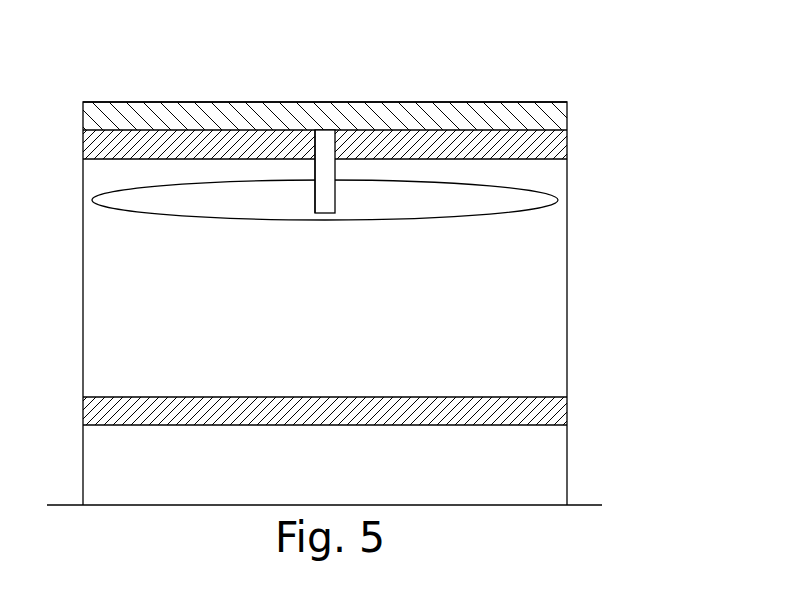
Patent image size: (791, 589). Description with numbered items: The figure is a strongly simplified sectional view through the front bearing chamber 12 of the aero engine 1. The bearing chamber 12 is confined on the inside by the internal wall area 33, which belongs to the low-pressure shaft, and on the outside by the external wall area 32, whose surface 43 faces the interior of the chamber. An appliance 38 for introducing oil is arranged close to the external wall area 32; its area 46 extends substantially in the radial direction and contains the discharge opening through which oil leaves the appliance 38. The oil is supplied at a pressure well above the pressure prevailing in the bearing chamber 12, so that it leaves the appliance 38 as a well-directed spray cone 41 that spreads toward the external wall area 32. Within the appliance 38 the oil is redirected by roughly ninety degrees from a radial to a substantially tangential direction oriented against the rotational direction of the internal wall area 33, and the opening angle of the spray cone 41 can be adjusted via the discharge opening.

The aero engine 1 is at (76, 77).
The front bearing chamber 12 is at (178, 99).
The external wall area 32 is at (320, 99).
The internal wall area 33 is at (547, 397).
The appliance for introducing oil 38 is at (312, 142).
The spray cone 41 is at (538, 200).
The surface of the external wall area 43 is at (489, 139).
The area of the appliance 46 is at (325, 147).